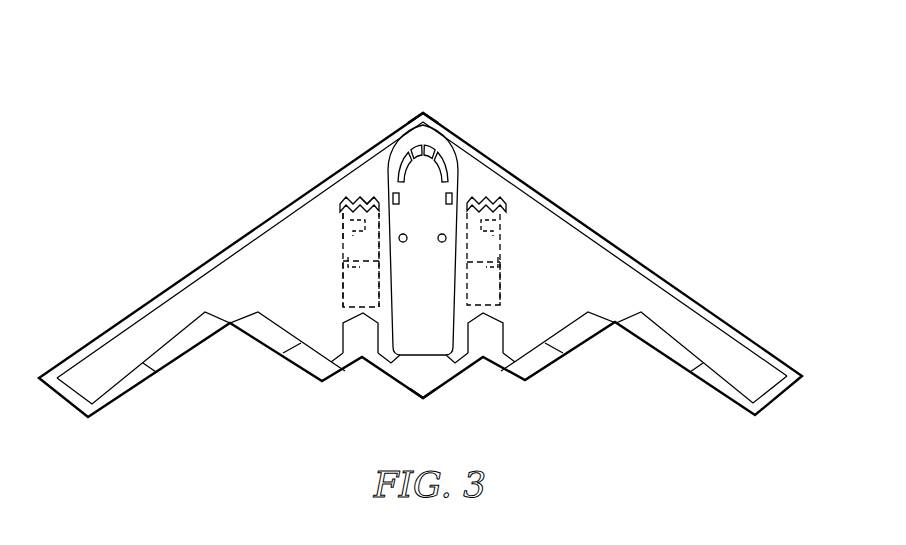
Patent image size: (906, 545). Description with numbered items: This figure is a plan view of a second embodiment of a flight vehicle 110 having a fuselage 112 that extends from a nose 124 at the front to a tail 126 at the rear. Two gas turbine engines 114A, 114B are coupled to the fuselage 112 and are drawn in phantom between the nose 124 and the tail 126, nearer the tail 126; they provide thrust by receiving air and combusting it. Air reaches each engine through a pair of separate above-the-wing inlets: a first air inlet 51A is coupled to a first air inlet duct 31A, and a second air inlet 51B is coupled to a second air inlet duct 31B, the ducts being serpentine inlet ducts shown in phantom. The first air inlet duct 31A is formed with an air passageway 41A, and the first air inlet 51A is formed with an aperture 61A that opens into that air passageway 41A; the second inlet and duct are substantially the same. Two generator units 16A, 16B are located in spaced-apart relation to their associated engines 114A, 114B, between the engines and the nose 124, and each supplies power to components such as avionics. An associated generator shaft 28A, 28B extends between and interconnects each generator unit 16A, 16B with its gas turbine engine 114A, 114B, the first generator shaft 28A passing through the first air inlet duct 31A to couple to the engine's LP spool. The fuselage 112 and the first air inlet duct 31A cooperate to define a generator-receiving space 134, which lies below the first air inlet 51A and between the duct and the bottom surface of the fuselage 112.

The flight vehicle 110 is at (637, 108).
The fuselage 112 is at (690, 280).
The nose 124 is at (423, 100).
The tail 126 is at (423, 410).
The first air inlet 51A is at (341, 198).
The second air inlet 51B is at (503, 198).
The aperture 61A is at (367, 196).
The air passageway 41A is at (380, 216).
The first air inlet duct 31A is at (343, 290).
The second air inlet duct 31B is at (503, 262).
The generator-receiving space 134 is at (331, 217).
The first generator unit 16A is at (343, 232).
The second generator unit 16B is at (503, 250).
The first generator shaft 28A is at (345, 255).
The second generator shaft 28B is at (503, 257).
The first gas turbine engine 114A is at (333, 283).
The second gas turbine engine 114B is at (513, 288).